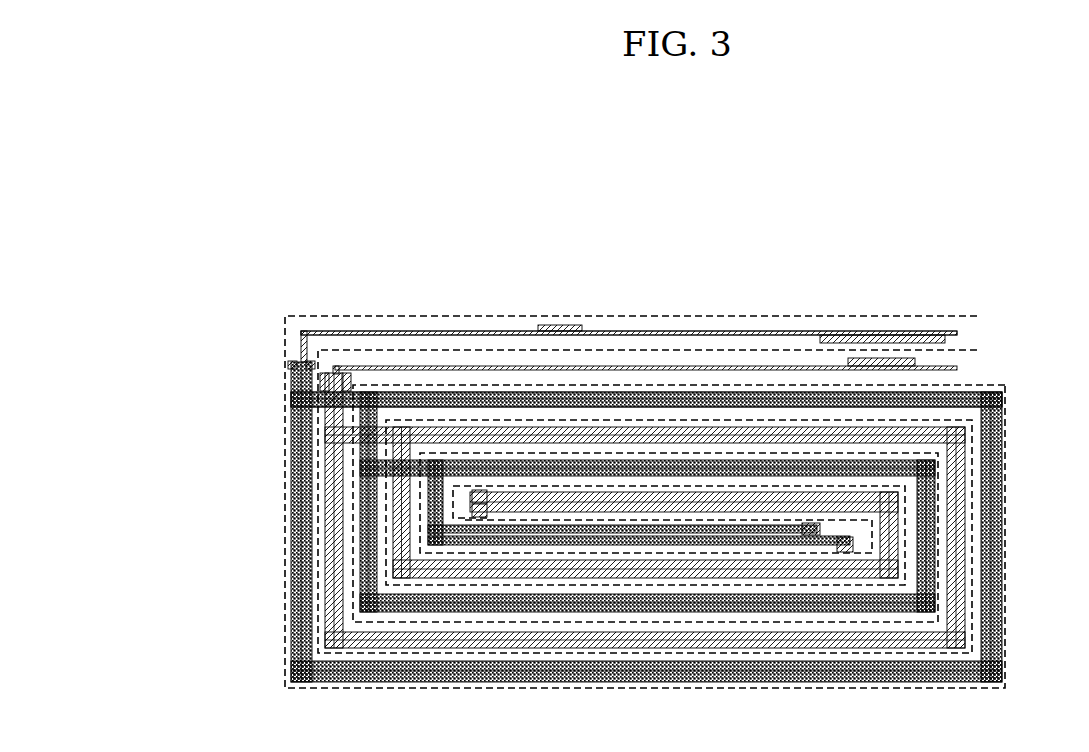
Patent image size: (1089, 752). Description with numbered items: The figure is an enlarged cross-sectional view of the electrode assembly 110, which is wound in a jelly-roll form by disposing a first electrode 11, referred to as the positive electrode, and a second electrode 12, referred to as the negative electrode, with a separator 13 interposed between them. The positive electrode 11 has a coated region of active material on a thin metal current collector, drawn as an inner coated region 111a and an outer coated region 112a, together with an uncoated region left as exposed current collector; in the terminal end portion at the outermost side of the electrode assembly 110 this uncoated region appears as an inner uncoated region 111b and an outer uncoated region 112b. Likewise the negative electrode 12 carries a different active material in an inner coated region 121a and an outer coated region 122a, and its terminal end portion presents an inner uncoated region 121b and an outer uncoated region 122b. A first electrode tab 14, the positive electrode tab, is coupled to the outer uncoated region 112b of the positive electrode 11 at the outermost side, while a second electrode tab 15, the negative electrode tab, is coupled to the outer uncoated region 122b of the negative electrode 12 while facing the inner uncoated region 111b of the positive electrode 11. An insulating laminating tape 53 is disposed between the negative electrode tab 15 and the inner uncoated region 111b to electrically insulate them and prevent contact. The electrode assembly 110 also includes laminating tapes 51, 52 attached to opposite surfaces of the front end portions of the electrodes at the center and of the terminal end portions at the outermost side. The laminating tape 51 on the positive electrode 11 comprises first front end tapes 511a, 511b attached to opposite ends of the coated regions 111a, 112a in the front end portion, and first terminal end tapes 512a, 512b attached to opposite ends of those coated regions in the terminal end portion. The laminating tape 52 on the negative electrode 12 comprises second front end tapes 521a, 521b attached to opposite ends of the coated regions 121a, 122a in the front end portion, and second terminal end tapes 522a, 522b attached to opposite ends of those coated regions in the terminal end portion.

The electrode assembly 110 is at (607, 167).
The separator 13 is at (980, 316).
The first electrode 11 is at (975, 333).
The second electrode 12 is at (975, 367).
The first electrode tab 14 is at (560, 328).
The second electrode tab 15 is at (880, 360).
The insulating laminating tape 53 is at (835, 338).
The inner coated region 111a is at (308, 542).
The inner uncoated region 111b is at (690, 340).
The outer coated region 112a is at (297, 510).
The outer uncoated region 112b is at (622, 331).
The inner coated region 121a is at (347, 450).
The inner uncoated region 121b is at (932, 367).
The outer coated region 122a is at (330, 417).
The outer uncoated region 122b is at (928, 392).
The laminating tape 51 is at (914, 246).
The laminating tape 52 is at (1031, 246).
The first front end tape 511a is at (815, 527).
The first front end tape 511b is at (850, 542).
The first terminal end tape 512a is at (310, 361).
The first terminal end tape 512b is at (291, 363).
The second front end tape 521a is at (483, 515).
The second front end tape 521b is at (472, 493).
The second terminal end tape 522a is at (346, 374).
The second terminal end tape 522b is at (325, 374).